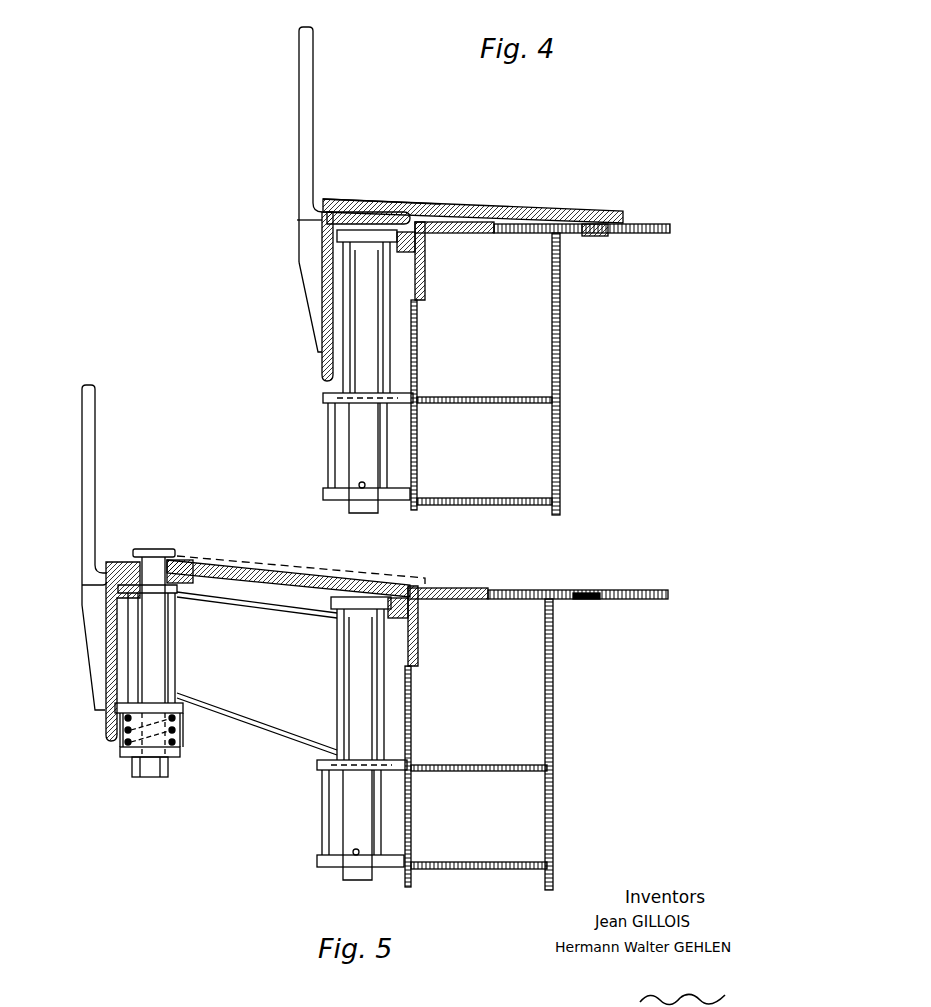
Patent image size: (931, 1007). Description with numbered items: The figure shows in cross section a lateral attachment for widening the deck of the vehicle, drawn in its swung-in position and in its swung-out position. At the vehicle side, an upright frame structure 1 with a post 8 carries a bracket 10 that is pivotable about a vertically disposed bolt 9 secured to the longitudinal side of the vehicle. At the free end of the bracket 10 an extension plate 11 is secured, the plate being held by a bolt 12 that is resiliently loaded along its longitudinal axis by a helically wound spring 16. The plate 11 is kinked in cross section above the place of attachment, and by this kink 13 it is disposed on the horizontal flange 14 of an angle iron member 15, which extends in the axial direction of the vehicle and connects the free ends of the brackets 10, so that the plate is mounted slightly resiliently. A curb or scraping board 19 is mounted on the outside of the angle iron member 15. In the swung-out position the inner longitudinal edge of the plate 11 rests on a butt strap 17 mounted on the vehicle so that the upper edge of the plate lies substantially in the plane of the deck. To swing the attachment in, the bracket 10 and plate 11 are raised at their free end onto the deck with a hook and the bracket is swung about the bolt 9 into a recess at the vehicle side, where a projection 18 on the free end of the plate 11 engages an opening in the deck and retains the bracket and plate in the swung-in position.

In FIG. 4, the frame 1 is at (560, 378).
In FIG. 5, the frame 1 is at (548, 738).
In FIG. 4, the upright post 8 is at (420, 362).
In FIG. 5, the upright post 8 is at (412, 727).
In FIG. 4, the vertically disposed bolt 9 is at (367, 368).
In FIG. 5, the vertically disposed bolt 9 is at (357, 730).
In FIG. 5, the bracket 10 is at (267, 707).
In FIG. 4, the extension plate 11 is at (440, 202).
In FIG. 5, the extension plate 11 is at (225, 568).
In FIG. 5, the bolt 12 is at (148, 660).
In FIG. 4, the kink 13 is at (377, 194).
In FIG. 5, the kink 13 is at (168, 555).
In FIG. 4, the horizontal flange 14 is at (390, 216).
In FIG. 5, the horizontal flange 14 is at (192, 573).
In FIG. 4, the angle iron member 15 is at (322, 255).
In FIG. 5, the angle iron member 15 is at (118, 565).
In FIG. 5, the helically wound spring 16 is at (125, 732).
In FIG. 5, the butt strap 17 is at (420, 592).
In FIG. 4, the projection 18 is at (602, 234).
In FIG. 4, the curb or scraping board 19 is at (302, 123).
In FIG. 5, the curb or scraping board 19 is at (90, 467).